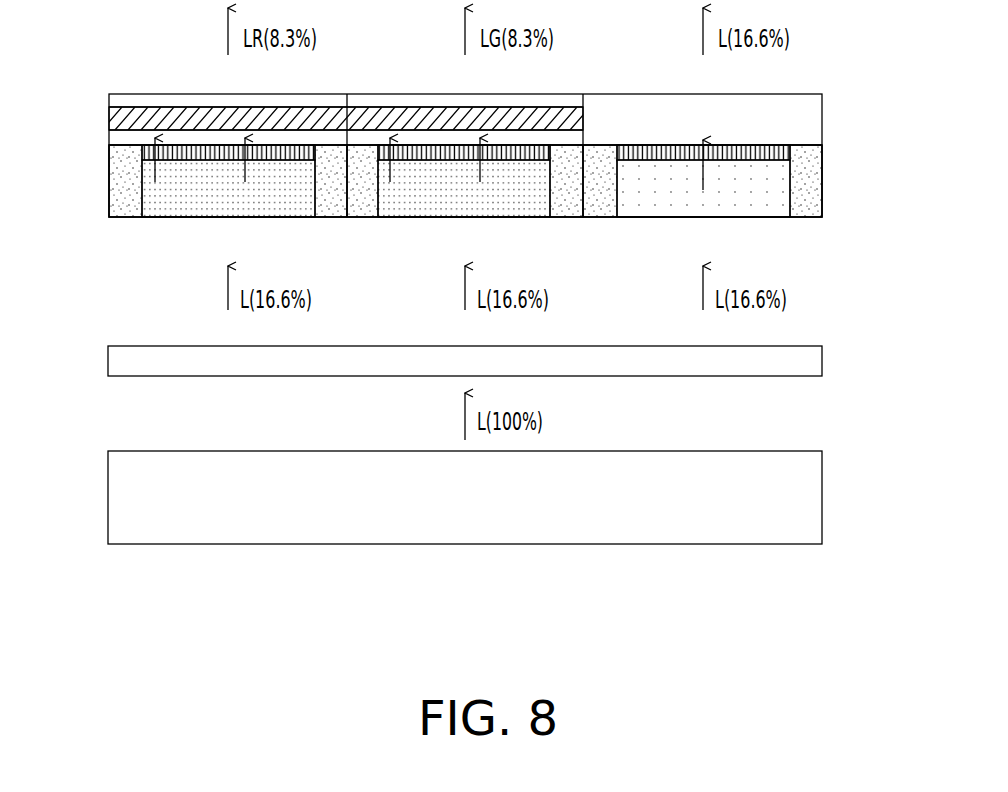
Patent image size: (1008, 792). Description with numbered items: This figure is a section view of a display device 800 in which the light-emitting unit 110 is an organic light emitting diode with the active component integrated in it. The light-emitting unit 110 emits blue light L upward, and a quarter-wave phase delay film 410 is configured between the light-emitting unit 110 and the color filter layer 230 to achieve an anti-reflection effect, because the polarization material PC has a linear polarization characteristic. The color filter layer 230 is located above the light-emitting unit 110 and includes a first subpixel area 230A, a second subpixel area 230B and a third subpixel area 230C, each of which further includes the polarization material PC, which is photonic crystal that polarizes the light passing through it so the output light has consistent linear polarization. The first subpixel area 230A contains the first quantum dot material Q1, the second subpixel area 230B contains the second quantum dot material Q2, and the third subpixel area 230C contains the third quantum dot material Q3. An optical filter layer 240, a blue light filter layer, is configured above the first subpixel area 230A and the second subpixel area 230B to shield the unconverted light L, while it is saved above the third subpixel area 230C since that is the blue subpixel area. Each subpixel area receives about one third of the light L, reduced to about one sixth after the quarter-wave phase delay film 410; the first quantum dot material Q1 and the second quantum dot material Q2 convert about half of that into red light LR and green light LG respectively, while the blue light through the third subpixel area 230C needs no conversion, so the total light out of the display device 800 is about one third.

The light-emitting unit 110 is at (812, 503).
The quarter-wave phase delay film 410 is at (812, 363).
The color filter layer 230 is at (822, 147).
The first subpixel area 230A is at (347, 218).
The second subpixel area 230B is at (583, 218).
The third subpixel area 230C is at (822, 218).
The optical filter layer 240 is at (118, 120).
The polarization material PC is at (140, 151).
The first quantum dot material Q1 is at (150, 208).
The second quantum dot material Q2 is at (537, 203).
The third quantum dot material Q3 is at (767, 213).
The display device 800 is at (883, 614).